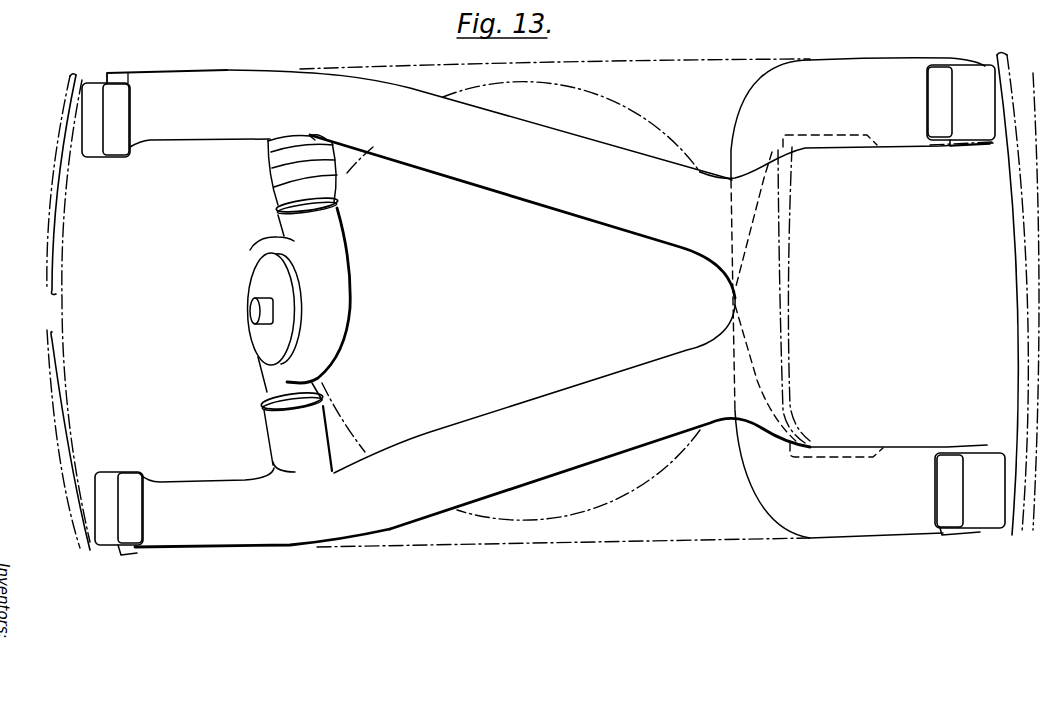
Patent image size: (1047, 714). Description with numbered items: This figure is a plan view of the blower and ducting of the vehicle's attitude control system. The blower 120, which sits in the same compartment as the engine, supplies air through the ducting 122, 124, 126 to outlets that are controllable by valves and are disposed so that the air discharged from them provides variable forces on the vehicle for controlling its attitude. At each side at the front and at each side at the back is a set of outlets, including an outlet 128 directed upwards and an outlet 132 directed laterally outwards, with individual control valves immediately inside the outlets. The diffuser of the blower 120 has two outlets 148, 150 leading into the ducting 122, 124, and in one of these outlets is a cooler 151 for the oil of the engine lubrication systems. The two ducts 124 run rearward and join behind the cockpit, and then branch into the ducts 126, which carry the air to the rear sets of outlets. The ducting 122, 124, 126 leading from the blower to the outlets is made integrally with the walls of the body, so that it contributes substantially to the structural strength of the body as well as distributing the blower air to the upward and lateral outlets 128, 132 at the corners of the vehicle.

The blower 120 is at (348, 300).
The ducting 122 is at (202, 62).
The ducts 124 is at (572, 147).
The ducts 126 is at (847, 68).
The outlet directed upwards 128 is at (130, 538).
The outlet directed laterally outwards 132 is at (137, 553).
The diffuser outlet 148 is at (318, 215).
The diffuser outlet 150 is at (270, 374).
The cooler 151 is at (270, 175).